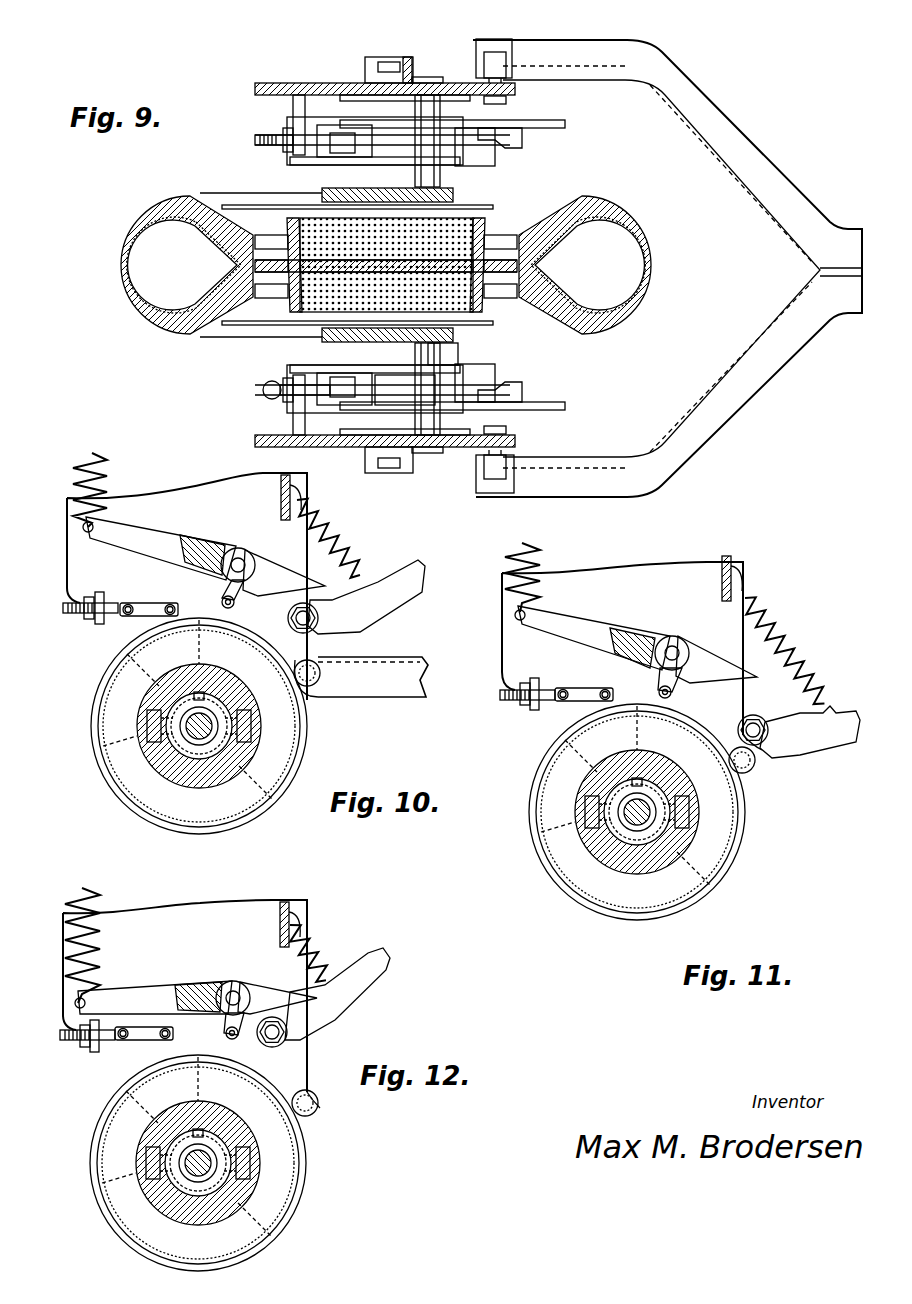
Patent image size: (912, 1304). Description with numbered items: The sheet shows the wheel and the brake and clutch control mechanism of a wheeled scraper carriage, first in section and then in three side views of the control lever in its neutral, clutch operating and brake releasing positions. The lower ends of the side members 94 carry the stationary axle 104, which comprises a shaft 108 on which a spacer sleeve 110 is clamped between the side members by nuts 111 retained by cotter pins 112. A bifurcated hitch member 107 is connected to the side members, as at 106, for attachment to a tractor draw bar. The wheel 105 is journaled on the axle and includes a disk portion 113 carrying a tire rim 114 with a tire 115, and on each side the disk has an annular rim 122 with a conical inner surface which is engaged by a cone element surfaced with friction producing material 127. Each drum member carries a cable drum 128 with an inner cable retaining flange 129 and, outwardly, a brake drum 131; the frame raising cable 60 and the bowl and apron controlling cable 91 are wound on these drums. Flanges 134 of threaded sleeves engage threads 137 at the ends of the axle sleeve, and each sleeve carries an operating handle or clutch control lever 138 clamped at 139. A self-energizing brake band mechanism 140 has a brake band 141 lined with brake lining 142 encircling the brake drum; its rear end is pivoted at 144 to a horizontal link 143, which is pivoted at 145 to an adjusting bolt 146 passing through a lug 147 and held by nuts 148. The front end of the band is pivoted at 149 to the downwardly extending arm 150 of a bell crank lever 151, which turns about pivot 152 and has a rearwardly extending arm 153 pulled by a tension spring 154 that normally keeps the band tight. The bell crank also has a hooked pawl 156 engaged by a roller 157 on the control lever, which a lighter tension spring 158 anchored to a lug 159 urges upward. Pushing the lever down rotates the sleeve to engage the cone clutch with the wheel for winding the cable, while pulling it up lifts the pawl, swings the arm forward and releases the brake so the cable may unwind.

In FIG. 9, the frame raising cable 60 is at (396, 202).
In FIG. 9, the bowl and apron controlling cable 91 is at (458, 350).
In FIG. 9, the side members 94 is at (264, 82).
In FIG. 10, the side members 94 is at (178, 488).
In FIG. 11, the side members 94 is at (648, 565).
In FIG. 12, the side members 94 is at (208, 903).
In FIG. 9, the axle 104 is at (388, 56).
In FIG. 9, the wheel 105 is at (175, 194).
In FIG. 9, the connection 106 is at (493, 55).
In FIG. 10, the connection 106 is at (320, 670).
In FIG. 11, the connection 106 is at (755, 766).
In FIG. 12, the connection 106 is at (312, 1092).
In FIG. 9, the bifurcated hitch member 107 is at (786, 140).
In FIG. 10, the bifurcated hitch member 107 is at (366, 697).
In FIG. 9, the shaft 108 is at (402, 470).
In FIG. 10, the shaft 108 is at (210, 710).
In FIG. 11, the shaft 108 is at (648, 798).
In FIG. 12, the shaft 108 is at (188, 1148).
In FIG. 10, the spacer sleeve 110 is at (215, 715).
In FIG. 11, the spacer sleeve 110 is at (652, 802).
In FIG. 12, the spacer sleeve 110 is at (212, 1150).
In FIG. 9, the nuts 111 is at (378, 67).
In FIG. 9, the cotter pins 112 is at (408, 57).
In FIG. 9, the disk portion 113 is at (289, 240).
In FIG. 9, the tire rim 114 is at (252, 233).
In FIG. 9, the tire 115 is at (136, 222).
In FIG. 9, the annular rims 122 is at (490, 240).
In FIG. 9, the friction producing material 127 is at (372, 278).
In FIG. 9, the cable drum 128 is at (455, 192).
In FIG. 10, the cable drum 128 is at (175, 675).
In FIG. 11, the cable drum 128 is at (618, 758).
In FIG. 12, the cable drum 128 is at (215, 1104).
In FIG. 9, the inner cable retaining flange 129 is at (492, 206).
In FIG. 9, the brake drum 131 is at (352, 368).
In FIG. 10, the flanges 134 is at (196, 760).
In FIG. 11, the flanges 134 is at (635, 845).
In FIG. 12, the flanges 134 is at (192, 1135).
In FIG. 9, the threads 137 is at (356, 97).
In FIG. 9, the operating handle 138 is at (556, 123).
In FIG. 10, the operating handle 138 is at (378, 610).
In FIG. 11, the operating handle 138 is at (836, 712).
In FIG. 12, the operating handle 138 is at (380, 950).
In FIG. 10, the clamp 139 is at (252, 730).
In FIG. 11, the clamp 139 is at (690, 812).
In FIG. 12, the clamp 139 is at (146, 1165).
In FIG. 10, the brake band mechanism 140 is at (90, 722).
In FIG. 11, the brake band mechanism 140 is at (528, 806).
In FIG. 12, the brake band mechanism 140 is at (306, 1160).
In FIG. 9, the brake band 141 is at (398, 374).
In FIG. 10, the brake band 141 is at (108, 788).
In FIG. 11, the brake band 141 is at (542, 840).
In FIG. 12, the brake band 141 is at (290, 1210).
In FIG. 10, the brake lining 142 is at (128, 810).
In FIG. 11, the brake lining 142 is at (550, 865).
In FIG. 12, the brake lining 142 is at (270, 1232).
In FIG. 9, the horizontal link 143 is at (340, 128).
In FIG. 10, the horizontal link 143 is at (152, 603).
In FIG. 11, the horizontal link 143 is at (584, 688).
In FIG. 12, the horizontal link 143 is at (148, 1027).
In FIG. 9, the pivotal connection 144 is at (345, 160).
In FIG. 10, the pivotal connection 144 is at (172, 606).
In FIG. 11, the pivotal connection 144 is at (606, 691).
In FIG. 12, the pivotal connection 144 is at (170, 1025).
In FIG. 9, the pivotal connection 145 is at (318, 163).
In FIG. 10, the pivotal connection 145 is at (128, 606).
In FIG. 11, the pivotal connection 145 is at (563, 691).
In FIG. 12, the pivotal connection 145 is at (123, 1030).
In FIG. 9, the adjusting bolt 146 is at (258, 138).
In FIG. 10, the adjusting bolt 146 is at (66, 612).
In FIG. 11, the adjusting bolt 146 is at (505, 696).
In FIG. 12, the adjusting bolt 146 is at (66, 1034).
In FIG. 9, the lug 147 is at (293, 110).
In FIG. 10, the lug 147 is at (97, 622).
In FIG. 11, the lug 147 is at (532, 710).
In FIG. 12, the lug 147 is at (92, 1050).
In FIG. 9, the nuts 148 is at (285, 150).
In FIG. 10, the nuts 148 is at (84, 602).
In FIG. 11, the nuts 148 is at (522, 704).
In FIG. 12, the nuts 148 is at (84, 1046).
In FIG. 10, the pivotal connection 149 is at (222, 602).
In FIG. 11, the pivotal connection 149 is at (672, 690).
In FIG. 12, the pivotal connection 149 is at (226, 1033).
In FIG. 10, the downwardly extending arm 150 is at (230, 548).
In FIG. 11, the downwardly extending arm 150 is at (660, 675).
In FIG. 12, the downwardly extending arm 150 is at (222, 1010).
In FIG. 9, the bell crank lever 151 is at (500, 160).
In FIG. 10, the bell crank lever 151 is at (205, 545).
In FIG. 11, the bell crank lever 151 is at (646, 632).
In FIG. 12, the bell crank lever 151 is at (182, 982).
In FIG. 9, the pivot 152 is at (428, 77).
In FIG. 10, the pivot 152 is at (240, 548).
In FIG. 11, the pivot 152 is at (678, 640).
In FIG. 12, the pivot 152 is at (235, 981).
In FIG. 10, the rearwardly extending arm 153 is at (160, 538).
In FIG. 11, the rearwardly extending arm 153 is at (590, 622).
In FIG. 12, the rearwardly extending arm 153 is at (130, 990).
In FIG. 10, the tension spring 154 is at (97, 454).
In FIG. 11, the tension spring 154 is at (560, 546).
In FIG. 12, the tension spring 154 is at (118, 891).
In FIG. 10, the hooked pawl 156 is at (272, 585).
In FIG. 11, the hooked pawl 156 is at (720, 668).
In FIG. 12, the hooked pawl 156 is at (272, 1000).
In FIG. 9, the roller 157 is at (523, 140).
In FIG. 10, the roller 157 is at (318, 616).
In FIG. 11, the roller 157 is at (760, 716).
In FIG. 12, the roller 157 is at (290, 1036).
In FIG. 10, the tension spring 158 is at (336, 542).
In FIG. 11, the tension spring 158 is at (792, 645).
In FIG. 12, the tension spring 158 is at (318, 950).
In FIG. 10, the lug 159 is at (292, 492).
In FIG. 11, the lug 159 is at (733, 557).
In FIG. 12, the lug 159 is at (290, 902).